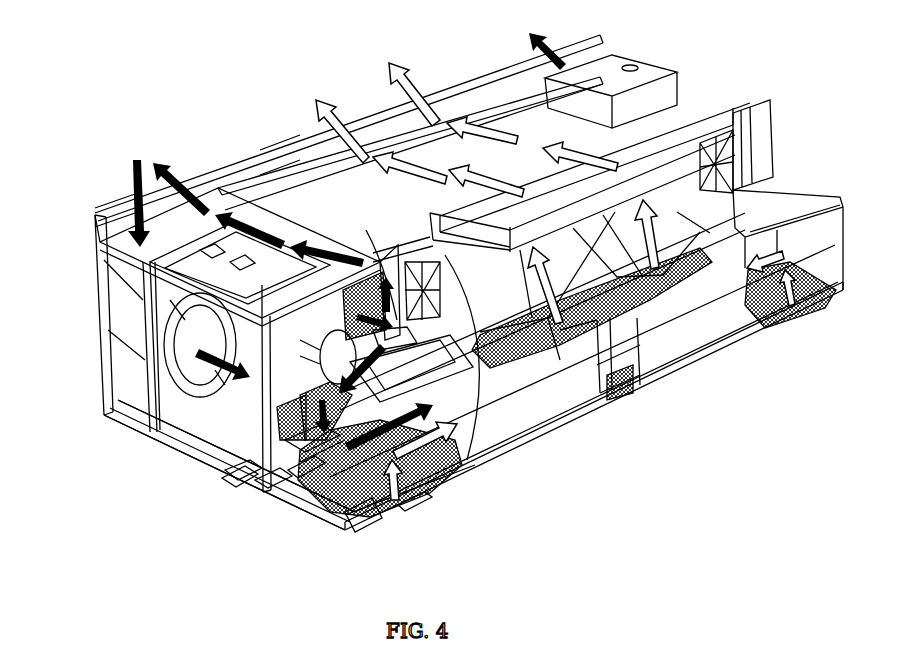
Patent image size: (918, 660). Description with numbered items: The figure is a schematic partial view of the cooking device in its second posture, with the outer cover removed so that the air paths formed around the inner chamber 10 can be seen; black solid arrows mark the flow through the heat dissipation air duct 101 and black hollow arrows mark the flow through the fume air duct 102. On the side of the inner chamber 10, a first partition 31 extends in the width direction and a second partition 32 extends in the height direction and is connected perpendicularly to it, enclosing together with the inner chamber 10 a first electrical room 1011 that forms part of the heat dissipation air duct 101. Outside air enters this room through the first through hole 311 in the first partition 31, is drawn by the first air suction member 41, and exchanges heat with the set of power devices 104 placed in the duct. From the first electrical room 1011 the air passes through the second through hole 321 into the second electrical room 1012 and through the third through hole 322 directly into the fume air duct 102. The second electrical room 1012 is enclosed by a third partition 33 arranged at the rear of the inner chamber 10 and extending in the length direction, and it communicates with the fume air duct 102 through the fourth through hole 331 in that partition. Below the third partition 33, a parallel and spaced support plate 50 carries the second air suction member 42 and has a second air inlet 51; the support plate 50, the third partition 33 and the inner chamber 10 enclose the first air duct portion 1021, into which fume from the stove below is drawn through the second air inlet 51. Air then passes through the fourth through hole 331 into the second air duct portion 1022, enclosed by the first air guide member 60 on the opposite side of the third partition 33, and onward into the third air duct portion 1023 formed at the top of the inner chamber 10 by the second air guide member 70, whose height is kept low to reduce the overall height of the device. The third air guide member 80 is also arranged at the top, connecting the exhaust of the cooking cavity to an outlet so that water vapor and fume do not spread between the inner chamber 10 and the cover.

The inner chamber 10 is at (230, 162).
The first through hole 311 is at (108, 208).
The second air guide member 70 is at (285, 150).
The second through hole 321 is at (363, 257).
The second air suction member 42 is at (366, 225).
The first air suction member 41 is at (140, 287).
The first partition 31 is at (150, 340).
The set of power devices 104 is at (157, 367).
The first electrical room 1011 is at (177, 452).
The second electrical room 1012 is at (217, 477).
The heat dissipation air duct 101 is at (70, 475).
The third partition 33 is at (230, 480).
The second partition 32 is at (233, 495).
The third through hole 322 is at (270, 473).
The second air inlet 51 is at (300, 468).
The fourth through hole 331 is at (418, 505).
The support plate 50 is at (374, 523).
The first air duct portion 1021 is at (452, 472).
The second air duct portion 1022 is at (510, 300).
The third air duct portion 1023 is at (593, 300).
The fume air duct 102 is at (486, 540).
The third air guide member 80 is at (625, 72).
The first air guide member 60 is at (683, 130).